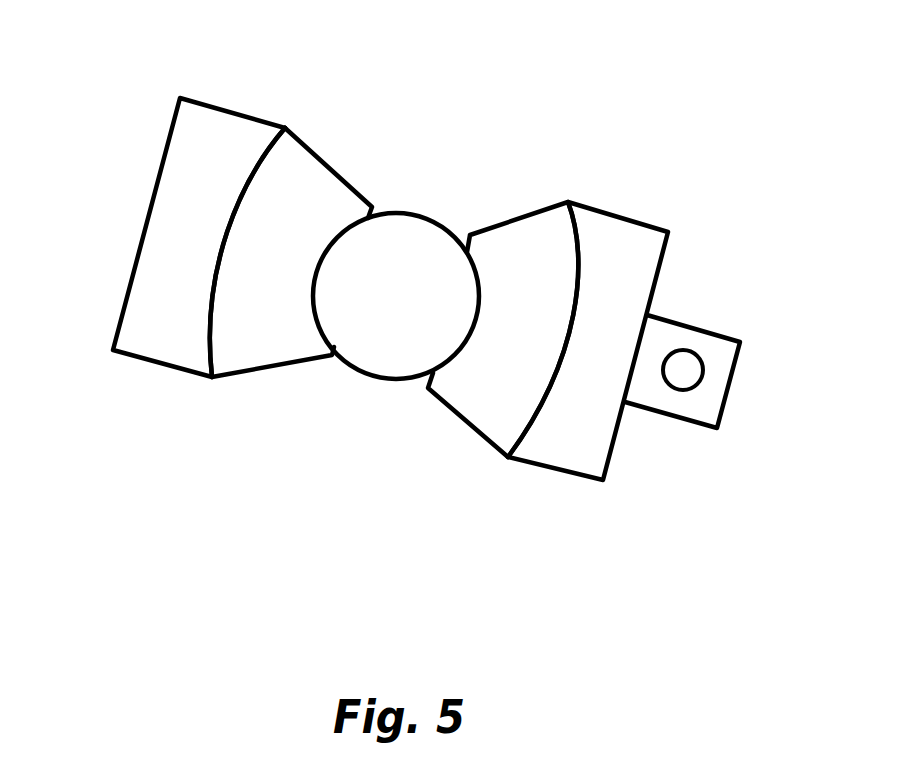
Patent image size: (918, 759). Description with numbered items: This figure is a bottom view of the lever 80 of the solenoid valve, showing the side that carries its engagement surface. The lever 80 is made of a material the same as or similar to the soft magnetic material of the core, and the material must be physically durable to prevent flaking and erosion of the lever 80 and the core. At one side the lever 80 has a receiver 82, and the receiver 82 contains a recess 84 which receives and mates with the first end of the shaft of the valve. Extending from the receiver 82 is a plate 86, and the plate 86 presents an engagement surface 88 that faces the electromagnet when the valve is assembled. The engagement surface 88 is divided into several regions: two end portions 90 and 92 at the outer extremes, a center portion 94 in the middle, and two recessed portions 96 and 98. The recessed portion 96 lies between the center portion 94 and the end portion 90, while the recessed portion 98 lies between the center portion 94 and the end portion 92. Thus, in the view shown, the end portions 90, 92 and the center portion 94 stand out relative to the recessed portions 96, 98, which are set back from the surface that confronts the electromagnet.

The lever 80 is at (463, 153).
The receiver 82 is at (695, 312).
The recess 84 is at (678, 375).
The plate 86 is at (212, 407).
The engagement surface 88 is at (277, 200).
The end portion 90 is at (185, 200).
The end portion 92 is at (568, 437).
The center portion 94 is at (385, 310).
The recessed portion 96 is at (277, 333).
The recessed portion 98 is at (539, 280).